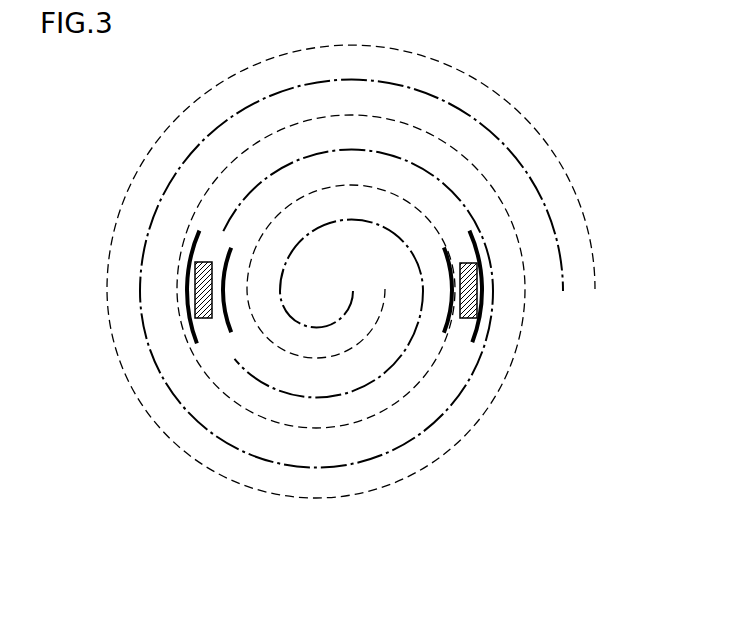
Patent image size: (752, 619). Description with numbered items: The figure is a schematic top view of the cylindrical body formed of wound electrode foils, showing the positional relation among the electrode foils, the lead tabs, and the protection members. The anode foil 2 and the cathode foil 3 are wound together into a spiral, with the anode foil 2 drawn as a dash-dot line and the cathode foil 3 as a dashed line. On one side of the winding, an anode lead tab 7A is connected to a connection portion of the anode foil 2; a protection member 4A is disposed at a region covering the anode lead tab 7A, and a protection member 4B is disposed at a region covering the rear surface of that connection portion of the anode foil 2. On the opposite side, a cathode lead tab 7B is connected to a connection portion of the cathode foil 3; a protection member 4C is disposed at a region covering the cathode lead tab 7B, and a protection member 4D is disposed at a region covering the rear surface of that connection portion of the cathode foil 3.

The anode foil 2 is at (564, 280).
The cathode foil 3 is at (594, 272).
The protection member 4A is at (193, 243).
The protection member 4B is at (228, 332).
The protection member 4C is at (478, 332).
The protection member 4D is at (445, 247).
The anode lead tab 7A is at (195, 295).
The cathode lead tab 7B is at (477, 270).